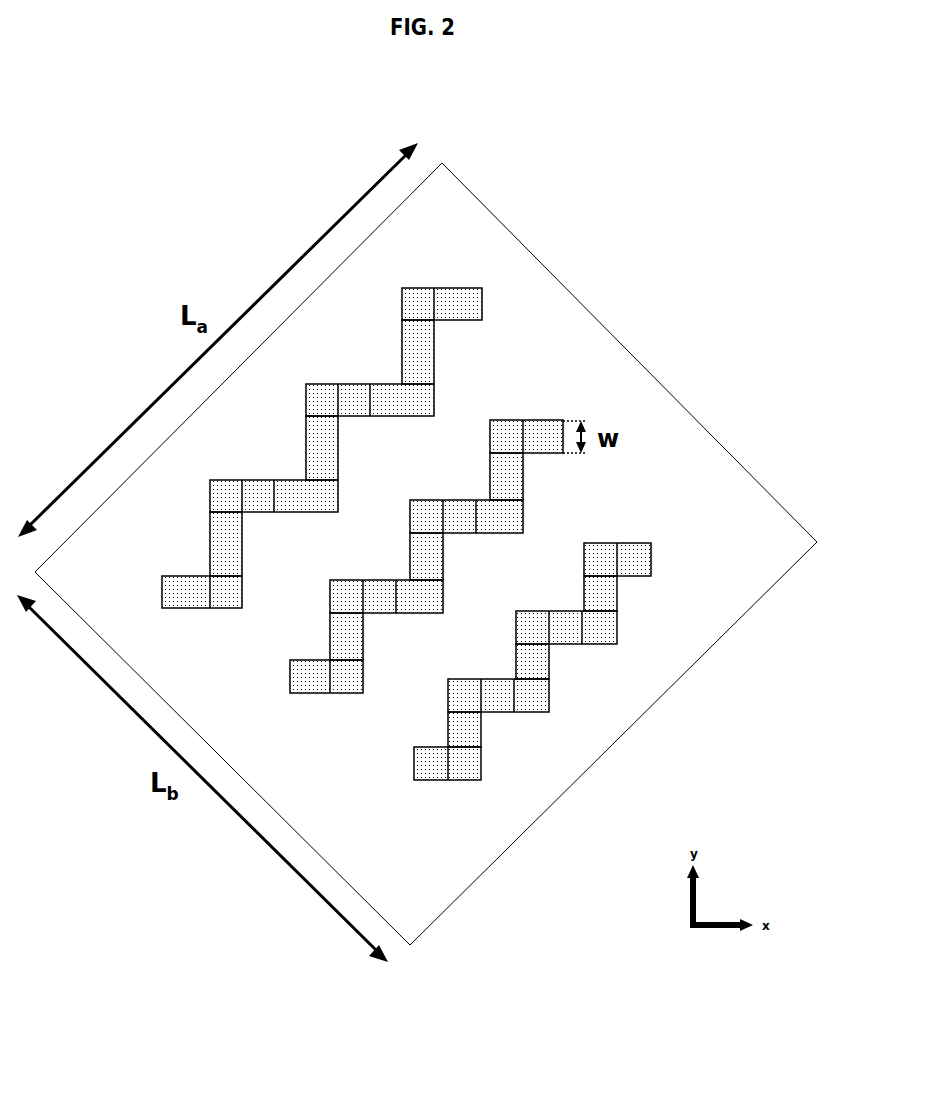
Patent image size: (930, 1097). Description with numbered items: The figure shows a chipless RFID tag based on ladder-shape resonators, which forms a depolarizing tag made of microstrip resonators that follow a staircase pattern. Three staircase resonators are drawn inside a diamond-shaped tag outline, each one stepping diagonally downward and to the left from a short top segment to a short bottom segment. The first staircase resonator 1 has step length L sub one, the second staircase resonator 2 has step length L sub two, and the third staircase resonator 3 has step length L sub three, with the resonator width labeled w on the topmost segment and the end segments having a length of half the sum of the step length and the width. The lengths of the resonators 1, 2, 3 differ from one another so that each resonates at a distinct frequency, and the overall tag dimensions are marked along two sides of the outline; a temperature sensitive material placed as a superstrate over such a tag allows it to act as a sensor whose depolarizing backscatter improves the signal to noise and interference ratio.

The first staircase conductor (length L1) 1 is at (357, 391).
The second staircase conductor (length L2) 2 is at (460, 506).
The third staircase conductor (length L3) 3 is at (571, 617).